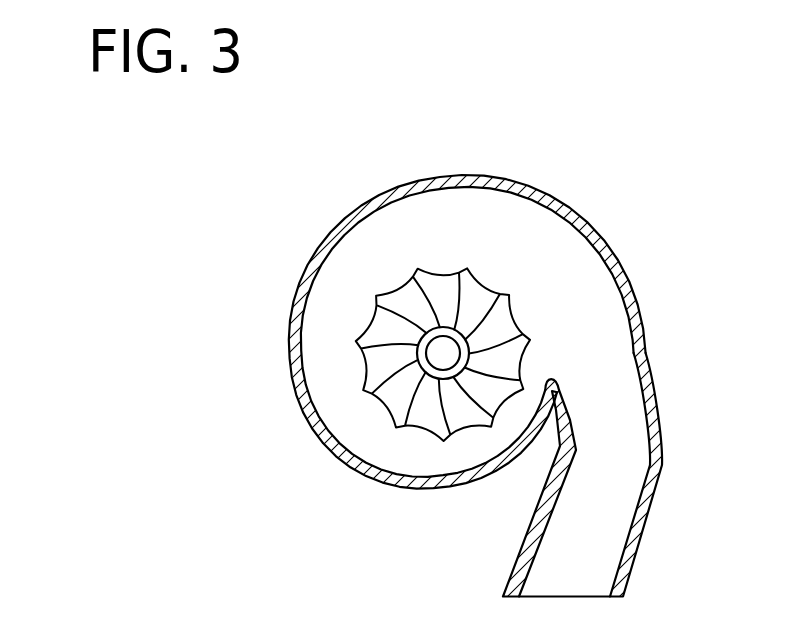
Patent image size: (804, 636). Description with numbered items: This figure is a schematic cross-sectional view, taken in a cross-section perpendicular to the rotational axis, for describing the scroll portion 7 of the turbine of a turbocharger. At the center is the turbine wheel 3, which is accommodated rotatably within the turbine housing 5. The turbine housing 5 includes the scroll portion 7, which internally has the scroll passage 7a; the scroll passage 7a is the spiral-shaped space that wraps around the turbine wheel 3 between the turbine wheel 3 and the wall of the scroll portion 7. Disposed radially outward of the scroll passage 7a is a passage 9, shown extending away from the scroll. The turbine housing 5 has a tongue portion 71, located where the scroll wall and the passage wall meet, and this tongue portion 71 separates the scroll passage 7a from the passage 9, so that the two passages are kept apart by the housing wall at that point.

The turbine wheel 3 is at (380, 285).
The turbine housing 5 is at (402, 318).
The scroll portion 7 is at (467, 303).
The scroll passage 7a is at (423, 205).
The passage 9 is at (614, 456).
The tongue portion 71 is at (549, 392).